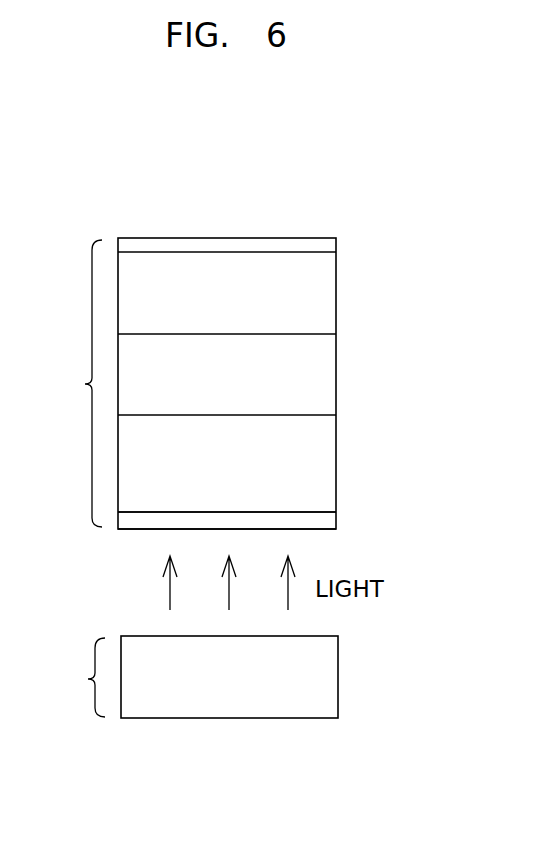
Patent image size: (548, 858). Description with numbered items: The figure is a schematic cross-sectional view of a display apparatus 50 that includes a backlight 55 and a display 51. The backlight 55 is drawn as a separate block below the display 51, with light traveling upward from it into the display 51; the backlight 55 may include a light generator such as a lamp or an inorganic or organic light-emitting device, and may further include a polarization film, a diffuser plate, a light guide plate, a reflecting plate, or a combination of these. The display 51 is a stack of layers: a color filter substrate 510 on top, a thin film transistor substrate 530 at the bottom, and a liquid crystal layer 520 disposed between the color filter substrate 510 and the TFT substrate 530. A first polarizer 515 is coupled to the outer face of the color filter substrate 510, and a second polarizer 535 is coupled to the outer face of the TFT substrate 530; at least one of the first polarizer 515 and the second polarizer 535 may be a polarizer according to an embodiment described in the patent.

The display apparatus 50 is at (348, 200).
The display 51 is at (79, 383).
The first polarizer 515 is at (330, 244).
The color filter substrate 510 is at (330, 293).
The liquid crystal layer 520 is at (330, 374).
The thin film transistor (TFT) substrate 530 is at (330, 464).
The second polarizer 535 is at (330, 520).
The backlight 55 is at (199, 677).